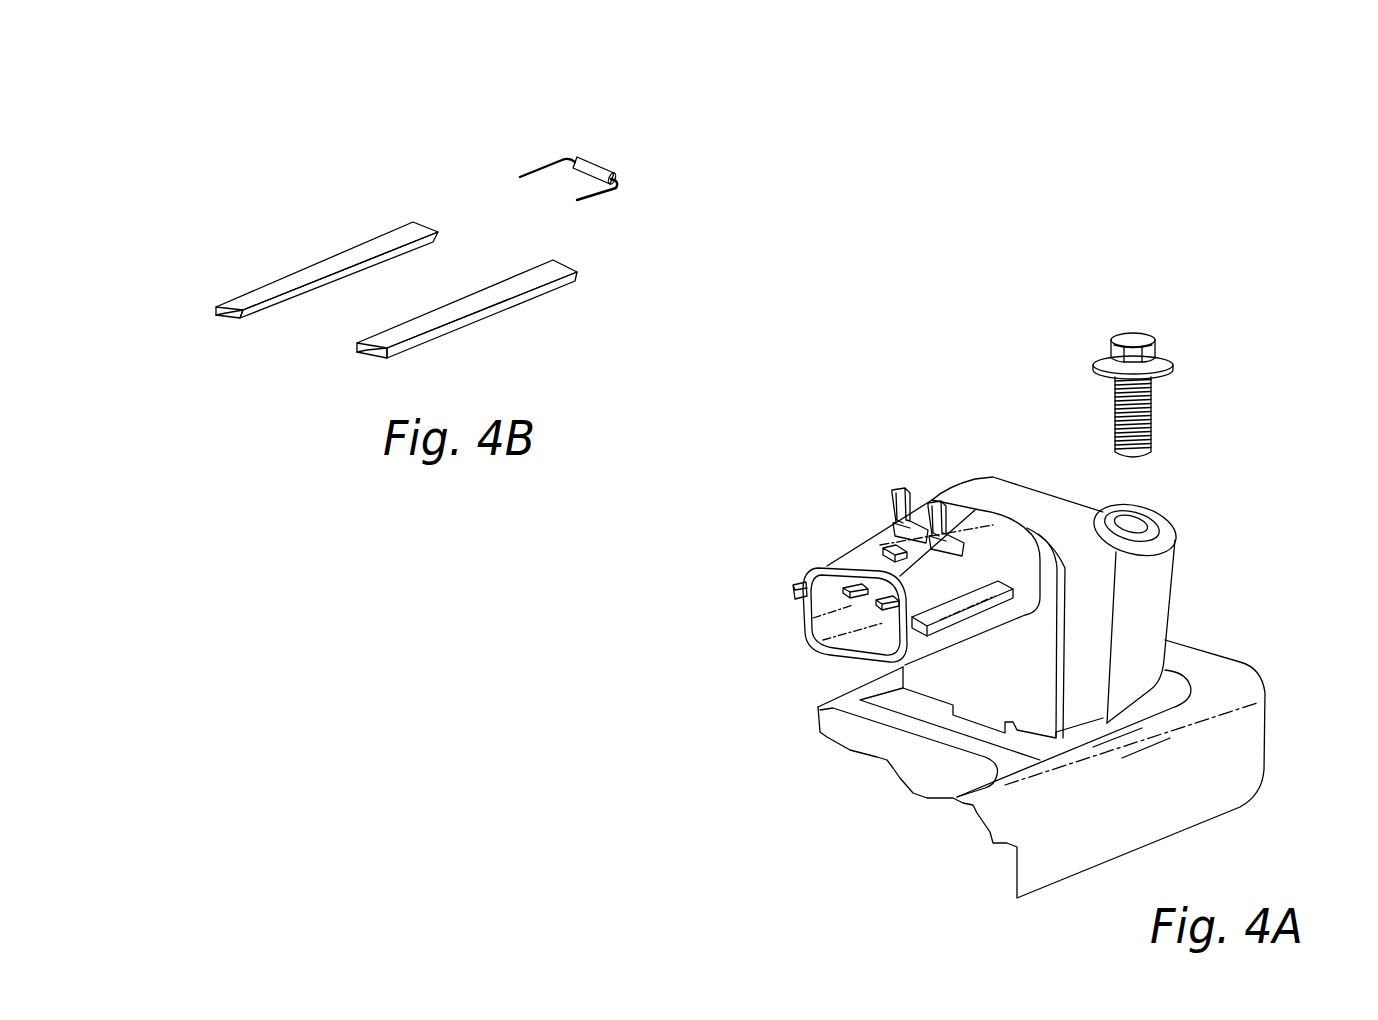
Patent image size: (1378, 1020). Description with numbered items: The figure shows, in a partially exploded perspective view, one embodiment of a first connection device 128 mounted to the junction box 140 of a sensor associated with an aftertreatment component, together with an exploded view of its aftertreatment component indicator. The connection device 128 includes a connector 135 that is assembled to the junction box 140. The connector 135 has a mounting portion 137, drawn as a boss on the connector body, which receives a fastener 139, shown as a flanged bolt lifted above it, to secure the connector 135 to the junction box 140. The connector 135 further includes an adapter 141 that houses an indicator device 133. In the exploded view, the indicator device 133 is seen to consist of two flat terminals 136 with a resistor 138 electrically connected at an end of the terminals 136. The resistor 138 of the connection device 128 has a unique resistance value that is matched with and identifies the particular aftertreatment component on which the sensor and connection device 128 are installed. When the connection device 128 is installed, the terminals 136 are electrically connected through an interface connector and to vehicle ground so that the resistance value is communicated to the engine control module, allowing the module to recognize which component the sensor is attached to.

In FIG. 4A, the first connection device 128 is at (983, 480).
In FIG. 4B, the indicator device 133 is at (448, 165).
In FIG. 4A, the indicator device 133 is at (823, 665).
In FIG. 4A, the connector 135 is at (798, 563).
In FIG. 4B, the terminals 136 is at (405, 313).
In FIG. 4A, the terminals 136 is at (872, 607).
In FIG. 4A, the mounting portion 137 is at (1178, 585).
In FIG. 4B, the resistor 138 is at (617, 155).
In FIG. 4A, the fastener 139 is at (1148, 417).
In FIG. 4A, the junction box 140 is at (1268, 735).
In FIG. 4A, the adapter 141 is at (870, 545).